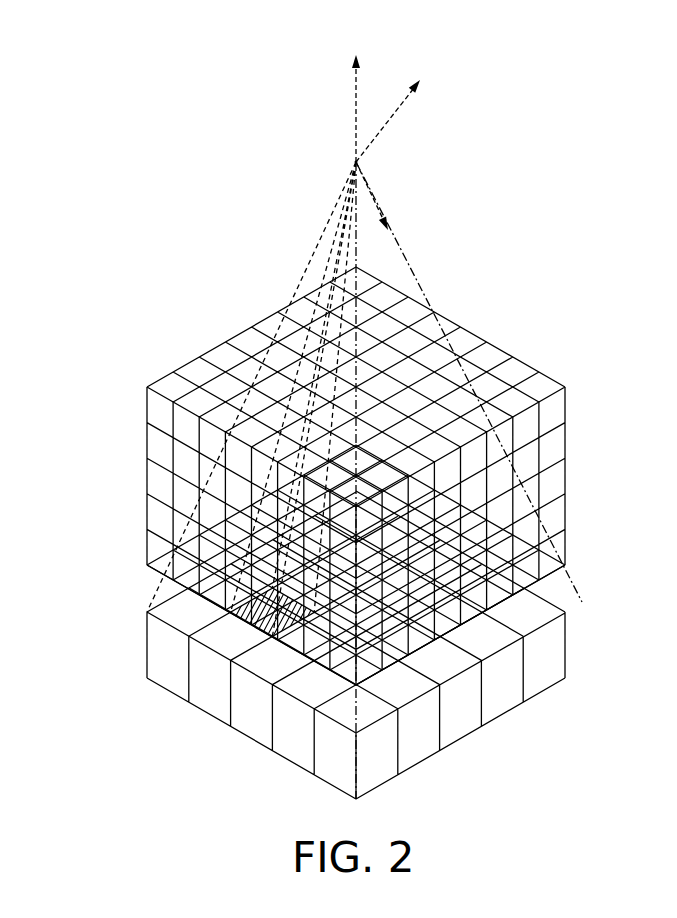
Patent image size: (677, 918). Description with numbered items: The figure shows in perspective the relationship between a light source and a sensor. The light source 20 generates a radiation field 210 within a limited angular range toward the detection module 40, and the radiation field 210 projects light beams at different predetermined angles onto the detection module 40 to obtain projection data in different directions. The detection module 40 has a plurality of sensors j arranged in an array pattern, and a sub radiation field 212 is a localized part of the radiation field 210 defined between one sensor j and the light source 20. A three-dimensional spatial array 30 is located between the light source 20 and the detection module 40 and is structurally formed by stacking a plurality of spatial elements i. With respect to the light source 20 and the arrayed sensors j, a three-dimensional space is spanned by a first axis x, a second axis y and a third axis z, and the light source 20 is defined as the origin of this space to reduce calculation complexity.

The light source 20 is at (353, 163).
The radiation field 210 is at (407, 250).
The sub radiation field 212 is at (348, 198).
The 3D spatial array 30 is at (220, 343).
The detection module 40 is at (142, 605).
The spatial element i is at (556, 479).
The sensor j is at (573, 634).